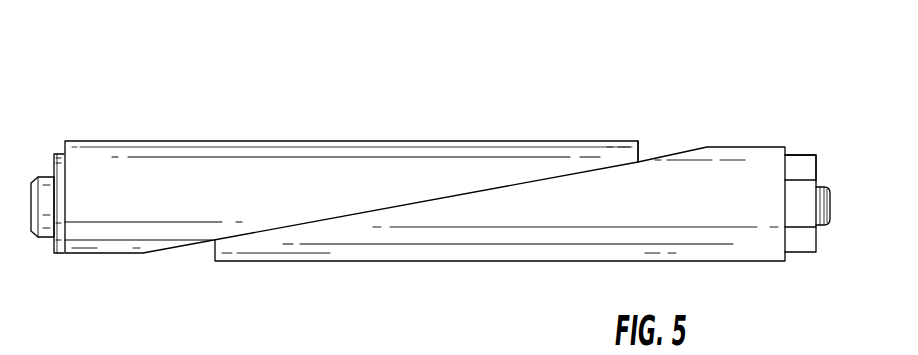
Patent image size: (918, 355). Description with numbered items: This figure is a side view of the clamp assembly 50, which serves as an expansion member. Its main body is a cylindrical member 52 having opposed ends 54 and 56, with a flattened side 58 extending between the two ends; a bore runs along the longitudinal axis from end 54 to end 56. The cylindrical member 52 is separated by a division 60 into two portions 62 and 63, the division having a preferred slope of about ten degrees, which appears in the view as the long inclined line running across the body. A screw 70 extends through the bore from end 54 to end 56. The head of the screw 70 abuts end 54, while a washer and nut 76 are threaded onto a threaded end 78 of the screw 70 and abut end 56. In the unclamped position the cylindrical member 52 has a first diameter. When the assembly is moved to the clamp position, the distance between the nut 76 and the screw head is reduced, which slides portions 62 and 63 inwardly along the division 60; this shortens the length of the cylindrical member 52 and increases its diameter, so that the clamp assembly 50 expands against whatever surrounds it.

The clamp assembly 50 is at (540, 112).
The cylindrical member 52 is at (447, 132).
The end 54 is at (63, 152).
The end 56 is at (795, 152).
The flattened side 58 is at (357, 261).
The division 60 is at (605, 168).
The portion 62 is at (333, 142).
The portion 63 is at (497, 248).
The screw 70 is at (44, 247).
The nut 76 is at (803, 164).
The threaded end 78 is at (823, 181).